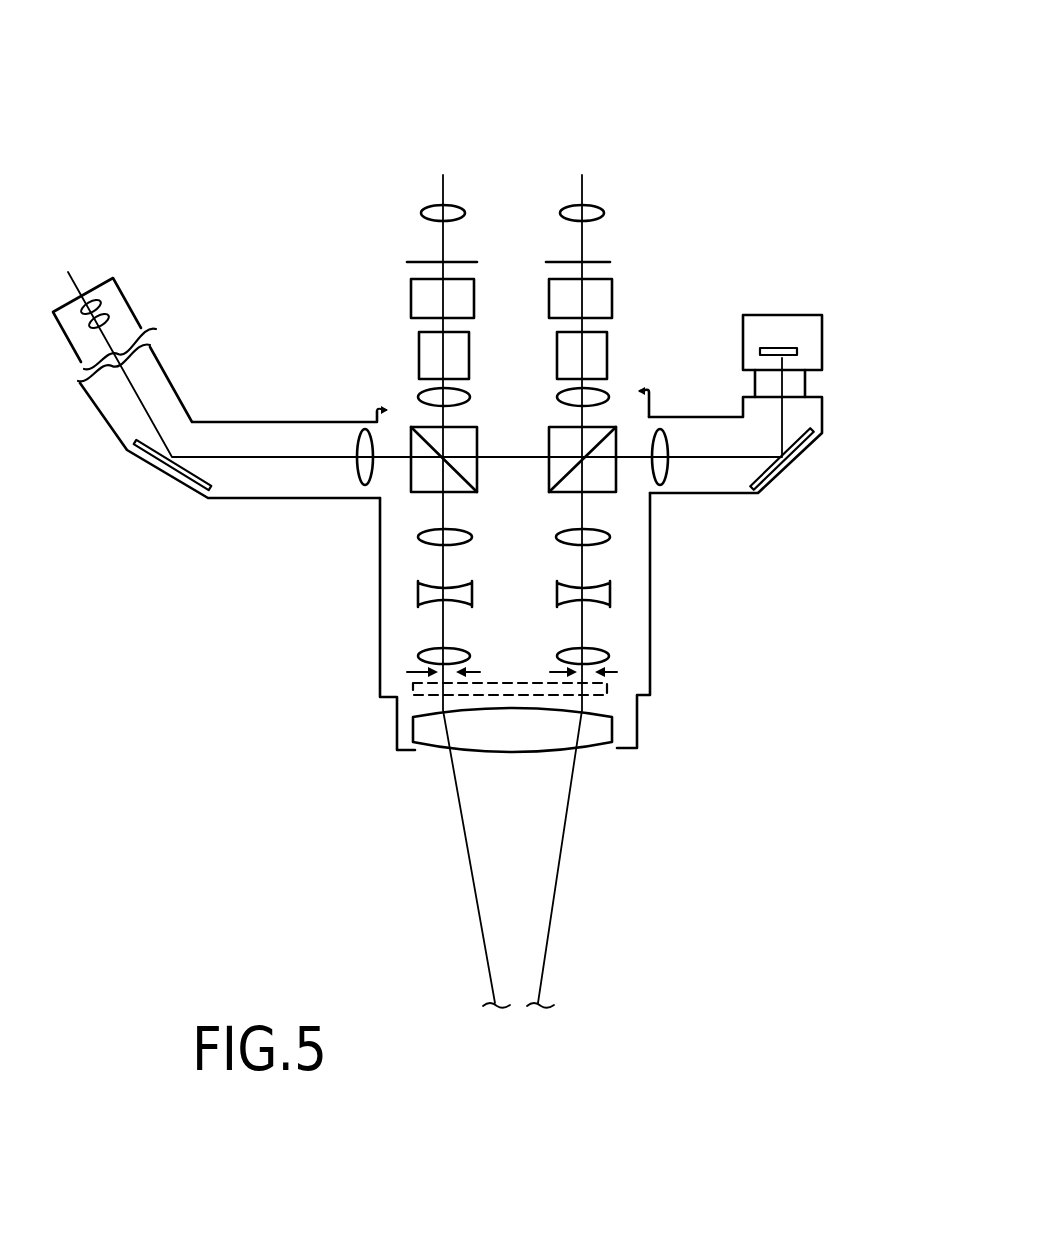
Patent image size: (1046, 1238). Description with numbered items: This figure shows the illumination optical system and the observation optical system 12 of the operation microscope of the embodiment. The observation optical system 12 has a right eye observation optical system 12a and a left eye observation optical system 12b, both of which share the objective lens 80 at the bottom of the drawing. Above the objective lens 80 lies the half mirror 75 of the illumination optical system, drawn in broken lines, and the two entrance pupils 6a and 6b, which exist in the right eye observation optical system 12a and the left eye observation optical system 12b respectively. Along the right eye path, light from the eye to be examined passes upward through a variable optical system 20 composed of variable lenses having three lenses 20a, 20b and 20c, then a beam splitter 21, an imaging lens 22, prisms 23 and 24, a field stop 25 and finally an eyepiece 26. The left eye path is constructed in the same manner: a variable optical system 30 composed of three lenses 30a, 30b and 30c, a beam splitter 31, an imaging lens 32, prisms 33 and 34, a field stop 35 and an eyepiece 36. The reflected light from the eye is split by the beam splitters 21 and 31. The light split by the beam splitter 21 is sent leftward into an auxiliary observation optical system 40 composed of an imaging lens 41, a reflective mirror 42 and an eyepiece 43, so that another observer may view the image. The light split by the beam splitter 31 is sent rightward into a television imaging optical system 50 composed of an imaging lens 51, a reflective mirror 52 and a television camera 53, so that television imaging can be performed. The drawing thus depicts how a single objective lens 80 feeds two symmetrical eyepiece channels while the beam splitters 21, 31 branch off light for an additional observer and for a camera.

The observation optical system 12 is at (610, 76).
The right eye observation optical system 12a is at (442, 176).
The left eye observation optical system 12b is at (579, 176).
The eyepiece 26 is at (427, 212).
The field stop 25 is at (418, 262).
The prism 24 is at (423, 293).
The prism 23 is at (420, 350).
The imaging lens 22 is at (418, 392).
The beam splitter 21 is at (411, 430).
The eyepiece 36 is at (605, 215).
The field stop 35 is at (607, 262).
The prism 34 is at (603, 297).
The prism 33 is at (605, 348).
The imaging lens 32 is at (607, 390).
The beam splitter 31 is at (620, 497).
The variable optical system 20 is at (275, 545).
The lens 20a is at (420, 655).
The lens 20b is at (418, 590).
The lens 20c is at (418, 534).
The variable optical system 30 is at (757, 538).
The lens 30a is at (608, 655).
The lens 30b is at (607, 590).
The lens 30c is at (607, 540).
The entrance pupil 6a is at (410, 670).
The entrance pupil 6b is at (612, 670).
The half mirror 75 is at (612, 688).
The objective lens 80 is at (610, 732).
The auxiliary observation optical system 40 is at (168, 482).
The imaging lens 41 is at (357, 450).
The reflective mirror 42 is at (150, 463).
The eyepiece 43 is at (106, 311).
The television imaging optical system 50 is at (793, 472).
The imaging lens 51 is at (672, 453).
The reflective mirror 52 is at (806, 450).
The television camera 53 is at (823, 345).